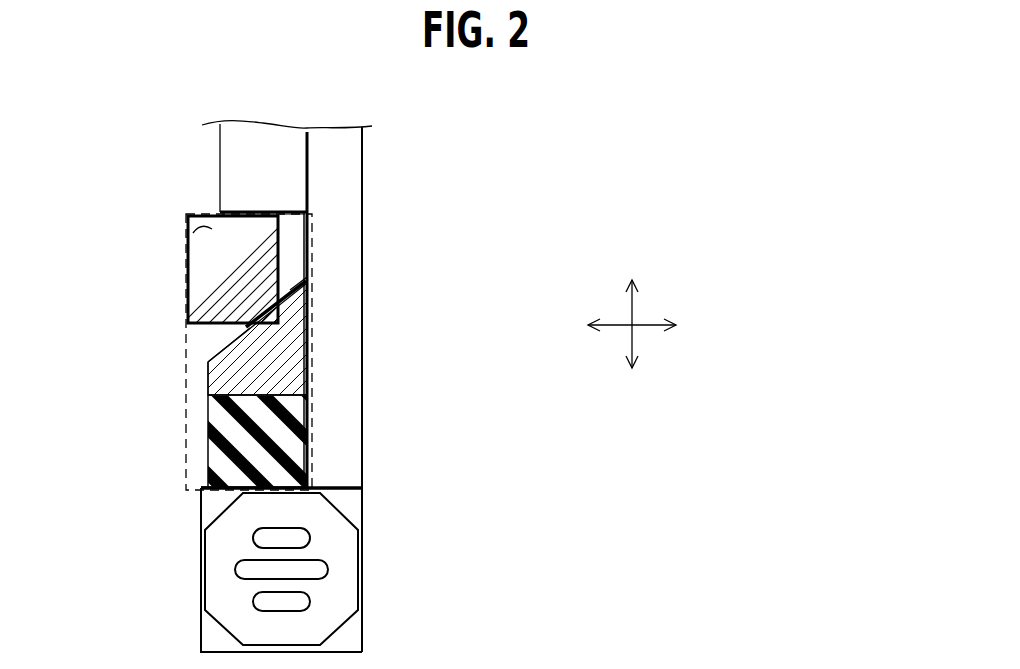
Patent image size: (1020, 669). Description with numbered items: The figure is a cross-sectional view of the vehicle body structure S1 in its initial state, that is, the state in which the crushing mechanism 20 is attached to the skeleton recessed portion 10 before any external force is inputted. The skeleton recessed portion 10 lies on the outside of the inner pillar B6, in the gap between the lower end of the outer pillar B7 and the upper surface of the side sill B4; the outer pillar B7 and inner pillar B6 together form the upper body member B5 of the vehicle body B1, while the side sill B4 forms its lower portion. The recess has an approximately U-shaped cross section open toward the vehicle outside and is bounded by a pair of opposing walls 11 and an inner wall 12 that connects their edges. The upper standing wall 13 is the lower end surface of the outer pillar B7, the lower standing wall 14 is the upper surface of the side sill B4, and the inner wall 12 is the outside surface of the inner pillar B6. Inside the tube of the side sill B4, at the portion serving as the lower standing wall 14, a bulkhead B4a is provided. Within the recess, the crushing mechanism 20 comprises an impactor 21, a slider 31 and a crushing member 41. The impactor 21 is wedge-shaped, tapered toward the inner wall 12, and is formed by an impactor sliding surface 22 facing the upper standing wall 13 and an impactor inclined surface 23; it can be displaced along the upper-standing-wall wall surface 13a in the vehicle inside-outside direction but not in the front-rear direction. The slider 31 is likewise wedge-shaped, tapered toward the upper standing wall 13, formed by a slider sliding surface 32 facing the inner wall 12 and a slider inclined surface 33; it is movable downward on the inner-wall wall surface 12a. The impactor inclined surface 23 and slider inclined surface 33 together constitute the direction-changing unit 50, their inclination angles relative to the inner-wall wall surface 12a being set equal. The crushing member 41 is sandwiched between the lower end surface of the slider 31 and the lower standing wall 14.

The vehicle body structure S1 is at (132, 108).
The vehicle body B1 is at (337, 342).
The upper body member B5 is at (360, 82).
The outer pillar B7 is at (258, 138).
The inner pillar B6 is at (333, 138).
The side sill B4 is at (363, 518).
The bulkhead B4a is at (338, 565).
The skeleton recessed portion 10 is at (274, 366).
The opposing walls 11 is at (274, 366).
The inner wall 12 is at (306, 258).
The inner-wall wall surface 12a is at (303, 454).
The upper standing wall 13 is at (303, 228).
The upper-standing-wall wall surface 13a is at (192, 230).
The lower standing wall 14 is at (250, 488).
The crushing mechanism 20 is at (186, 363).
The impactor 21 is at (215, 276).
The impactor sliding surface 22 is at (246, 211).
The impactor inclined surface 23 is at (248, 343).
The slider 31 is at (292, 372).
The slider sliding surface 32 is at (293, 338).
The slider inclined surface 33 is at (292, 282).
The crushing member 41 is at (220, 448).
The direction-changing unit 50 is at (274, 306).